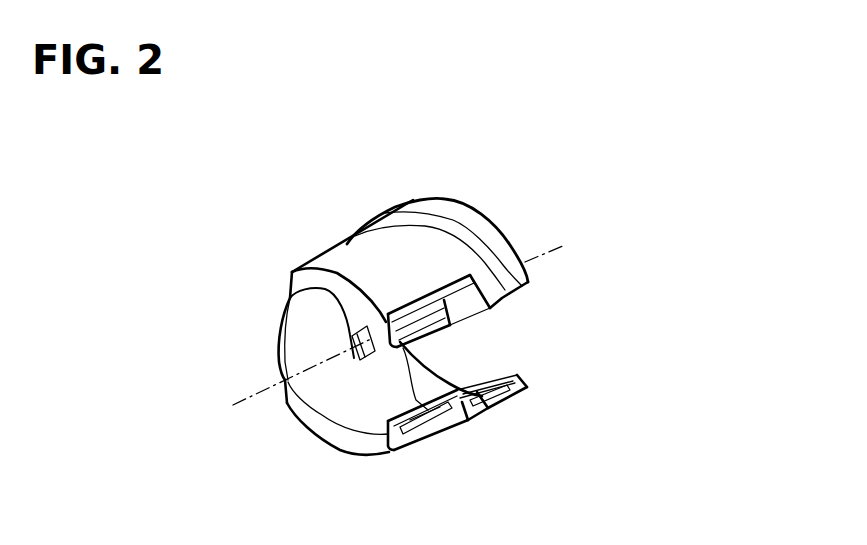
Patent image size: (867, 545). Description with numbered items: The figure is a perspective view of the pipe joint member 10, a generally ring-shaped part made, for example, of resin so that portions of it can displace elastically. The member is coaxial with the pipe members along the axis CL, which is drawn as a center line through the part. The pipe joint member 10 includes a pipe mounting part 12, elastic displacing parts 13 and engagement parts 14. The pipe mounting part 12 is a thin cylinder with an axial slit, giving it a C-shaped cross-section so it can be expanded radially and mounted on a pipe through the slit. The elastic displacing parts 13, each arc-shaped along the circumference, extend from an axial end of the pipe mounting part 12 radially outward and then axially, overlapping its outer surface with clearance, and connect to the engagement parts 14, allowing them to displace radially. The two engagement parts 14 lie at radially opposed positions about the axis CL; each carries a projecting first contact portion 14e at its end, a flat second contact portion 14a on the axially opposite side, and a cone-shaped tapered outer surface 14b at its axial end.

The pipe joint member 10 is at (304, 266).
The pipe mounting part 12 is at (442, 354).
The elastic displacing parts 13 is at (438, 238).
The engagement parts 14 is at (500, 253).
The second contact portion 14a is at (385, 213).
The tapered outer surface 14b is at (445, 199).
The first contact portion 14e is at (440, 382).
The axis CL is at (253, 395).